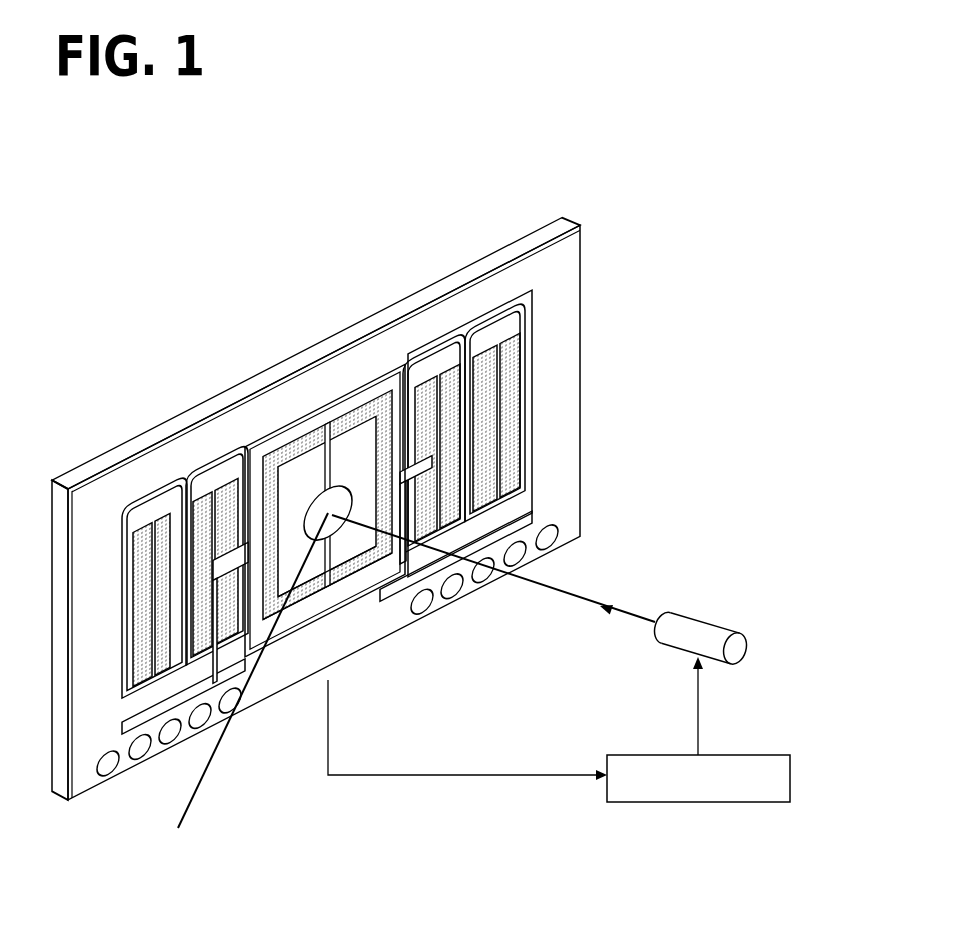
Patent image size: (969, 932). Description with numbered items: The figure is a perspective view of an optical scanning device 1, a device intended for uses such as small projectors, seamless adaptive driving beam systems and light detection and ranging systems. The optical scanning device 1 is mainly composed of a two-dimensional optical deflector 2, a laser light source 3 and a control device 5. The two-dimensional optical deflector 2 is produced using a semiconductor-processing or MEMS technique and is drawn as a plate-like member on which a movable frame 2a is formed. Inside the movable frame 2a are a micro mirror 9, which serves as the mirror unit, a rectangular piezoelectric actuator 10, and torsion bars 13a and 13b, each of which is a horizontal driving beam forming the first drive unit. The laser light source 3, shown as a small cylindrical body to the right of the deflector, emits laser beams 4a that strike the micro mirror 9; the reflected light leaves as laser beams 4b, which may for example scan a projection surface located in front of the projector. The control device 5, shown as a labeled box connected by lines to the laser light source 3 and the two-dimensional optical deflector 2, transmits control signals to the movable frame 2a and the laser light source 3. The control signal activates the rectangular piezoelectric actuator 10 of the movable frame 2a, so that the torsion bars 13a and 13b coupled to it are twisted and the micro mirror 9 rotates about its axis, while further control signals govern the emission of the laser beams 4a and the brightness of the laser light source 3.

The optical scanning device 1 is at (301, 492).
The two-dimensional optical deflector 2 is at (64, 436).
The movable frame 2a is at (280, 443).
The laser light source 3 is at (705, 625).
The laser beams 4a is at (590, 590).
The laser beams 4b is at (197, 812).
The control device 5 is at (770, 756).
The micro mirror 9 is at (358, 495).
The rectangular piezoelectric actuator 10 is at (357, 555).
The torsion bar 13a is at (345, 425).
The torsion bar 13b is at (320, 578).